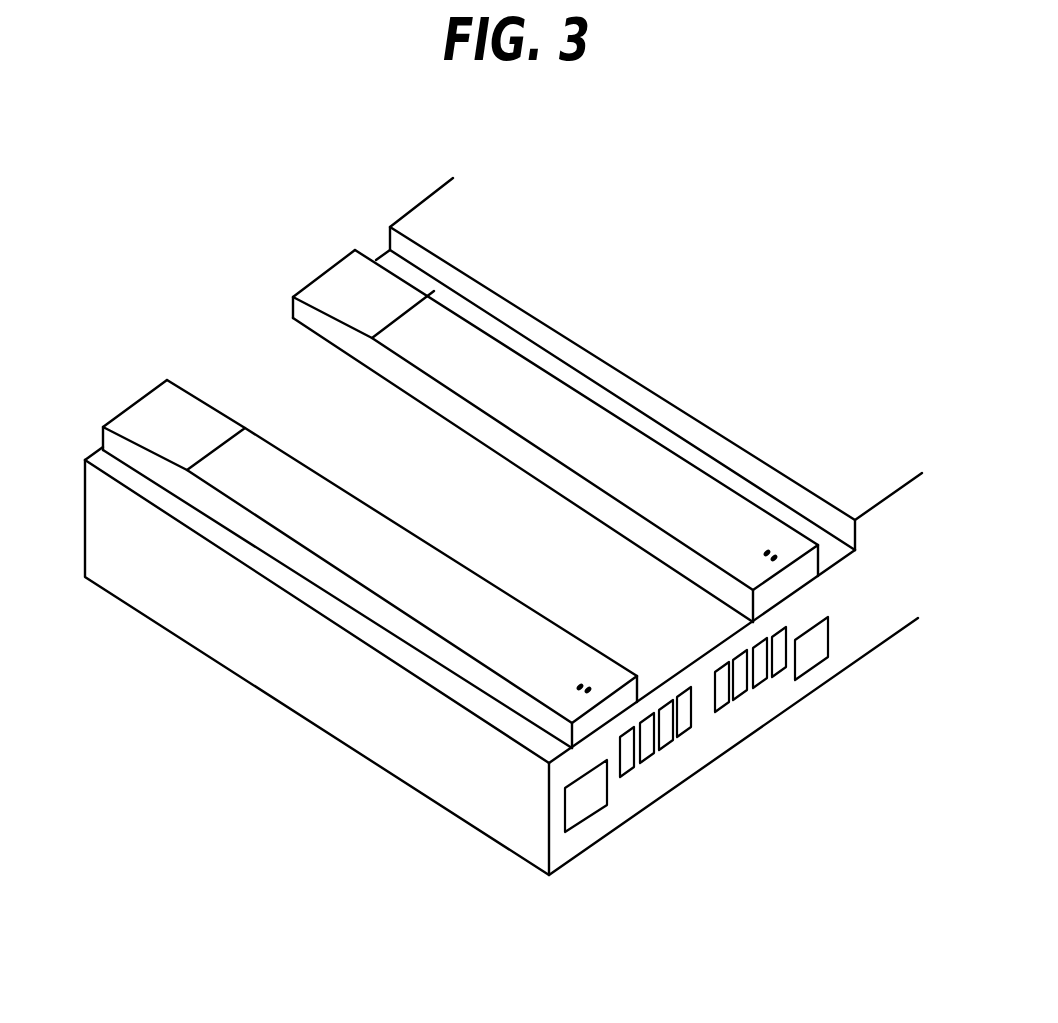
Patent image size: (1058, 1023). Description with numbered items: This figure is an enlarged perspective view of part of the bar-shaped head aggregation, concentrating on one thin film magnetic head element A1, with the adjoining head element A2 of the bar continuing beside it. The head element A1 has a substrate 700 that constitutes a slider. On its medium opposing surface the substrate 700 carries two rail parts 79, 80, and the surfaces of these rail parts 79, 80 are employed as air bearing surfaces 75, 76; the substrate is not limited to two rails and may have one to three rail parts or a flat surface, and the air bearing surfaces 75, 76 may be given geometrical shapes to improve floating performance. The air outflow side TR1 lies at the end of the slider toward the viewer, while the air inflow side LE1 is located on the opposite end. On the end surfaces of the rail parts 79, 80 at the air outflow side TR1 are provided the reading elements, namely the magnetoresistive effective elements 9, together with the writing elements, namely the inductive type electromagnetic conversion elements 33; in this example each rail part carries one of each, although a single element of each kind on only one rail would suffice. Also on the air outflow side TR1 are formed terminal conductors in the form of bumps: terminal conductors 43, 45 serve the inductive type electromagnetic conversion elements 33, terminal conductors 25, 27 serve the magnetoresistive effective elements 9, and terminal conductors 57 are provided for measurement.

The substrate 700 is at (228, 650).
The air bearing surface 75 is at (269, 457).
The air bearing surface 76 is at (538, 378).
The rail part 79 is at (128, 450).
The rail part 80 is at (313, 317).
The magnetoresistive effective element 9 is at (568, 646).
The inductive type electromagnetic conversion element 33 is at (586, 684).
The terminal conductor 25 is at (628, 767).
The terminal conductor 27 is at (657, 712).
The terminal conductor 43 is at (670, 742).
The terminal conductor 45 is at (688, 728).
The terminal conductor for measurement 57 is at (573, 800).
The air inflow side LE1 is at (160, 371).
The air outflow side TR1 is at (806, 590).
The thin film magnetic head element A1 is at (222, 292).
The second surface area A2 is at (446, 160).